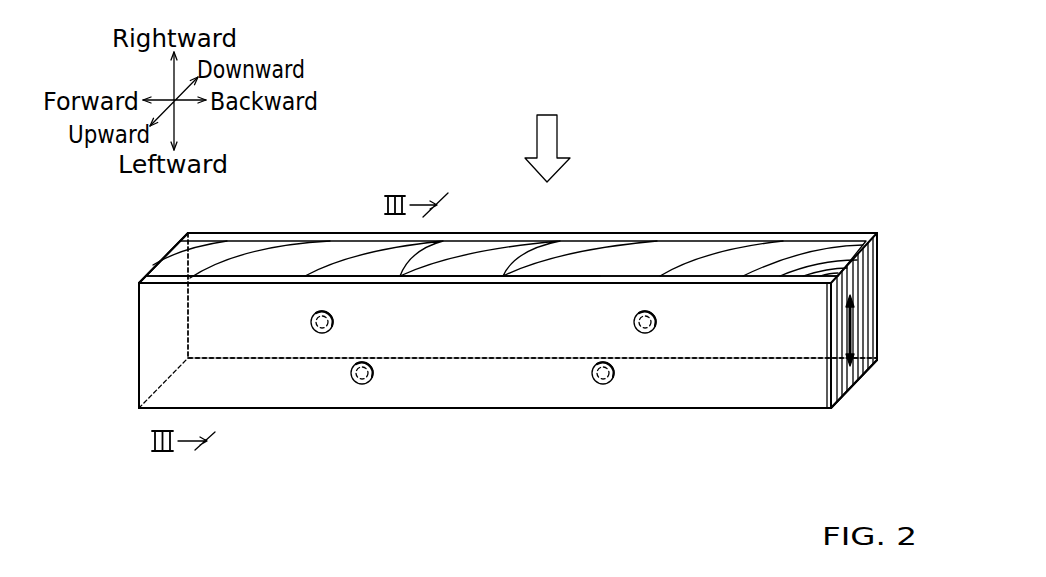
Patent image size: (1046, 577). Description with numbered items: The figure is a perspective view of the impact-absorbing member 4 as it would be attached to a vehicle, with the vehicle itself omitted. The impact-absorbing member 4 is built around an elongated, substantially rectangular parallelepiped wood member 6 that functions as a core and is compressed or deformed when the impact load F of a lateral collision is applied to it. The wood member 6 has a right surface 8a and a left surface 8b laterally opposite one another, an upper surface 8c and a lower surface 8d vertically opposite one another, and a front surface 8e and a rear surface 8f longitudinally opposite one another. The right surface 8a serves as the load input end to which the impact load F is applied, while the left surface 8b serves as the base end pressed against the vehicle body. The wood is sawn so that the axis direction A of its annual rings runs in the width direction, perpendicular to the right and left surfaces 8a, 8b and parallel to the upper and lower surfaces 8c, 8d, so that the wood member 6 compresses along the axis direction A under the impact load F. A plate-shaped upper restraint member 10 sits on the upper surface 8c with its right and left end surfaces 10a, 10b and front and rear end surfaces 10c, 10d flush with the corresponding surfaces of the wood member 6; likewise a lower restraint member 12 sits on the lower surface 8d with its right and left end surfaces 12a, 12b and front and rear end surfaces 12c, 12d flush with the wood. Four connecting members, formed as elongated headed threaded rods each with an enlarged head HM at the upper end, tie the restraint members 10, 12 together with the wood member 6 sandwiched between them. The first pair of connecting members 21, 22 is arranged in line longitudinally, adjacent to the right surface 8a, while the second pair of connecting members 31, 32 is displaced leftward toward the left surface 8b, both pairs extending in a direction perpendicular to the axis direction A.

The impact-absorbing member 4 is at (825, 157).
The wood member 6 is at (305, 254).
The right surface 8a is at (700, 258).
The left surface 8b is at (757, 380).
The upper surface 8c is at (836, 368).
The lower surface 8d is at (877, 315).
The front surface 8e is at (165, 335).
The rear surface 8f is at (868, 282).
The upper restraint member 10 is at (494, 267).
The right end surface of upper restraint member 10a is at (221, 282).
The left end surface of upper restraint member 10b is at (833, 410).
The front end surface of upper restraint member 10c is at (140, 283).
The rear end surface of upper restraint member 10d is at (830, 308).
The lower restraint member 12 is at (464, 224).
The right end surface of lower restraint member 12a is at (777, 238).
The left end surface of lower restraint member 12b is at (875, 362).
The front end surface of lower restraint member 12c is at (190, 232).
The rear end surface of lower restraint member 12d is at (877, 262).
The first front connecting member 21 is at (302, 340).
The first rear connecting member 22 is at (657, 344).
The second front connecting member 31 is at (360, 398).
The second rear connecting member 32 is at (611, 396).
The head HM is at (368, 362).
The axis direction of annual rings A is at (846, 330).
The impact load F is at (552, 127).